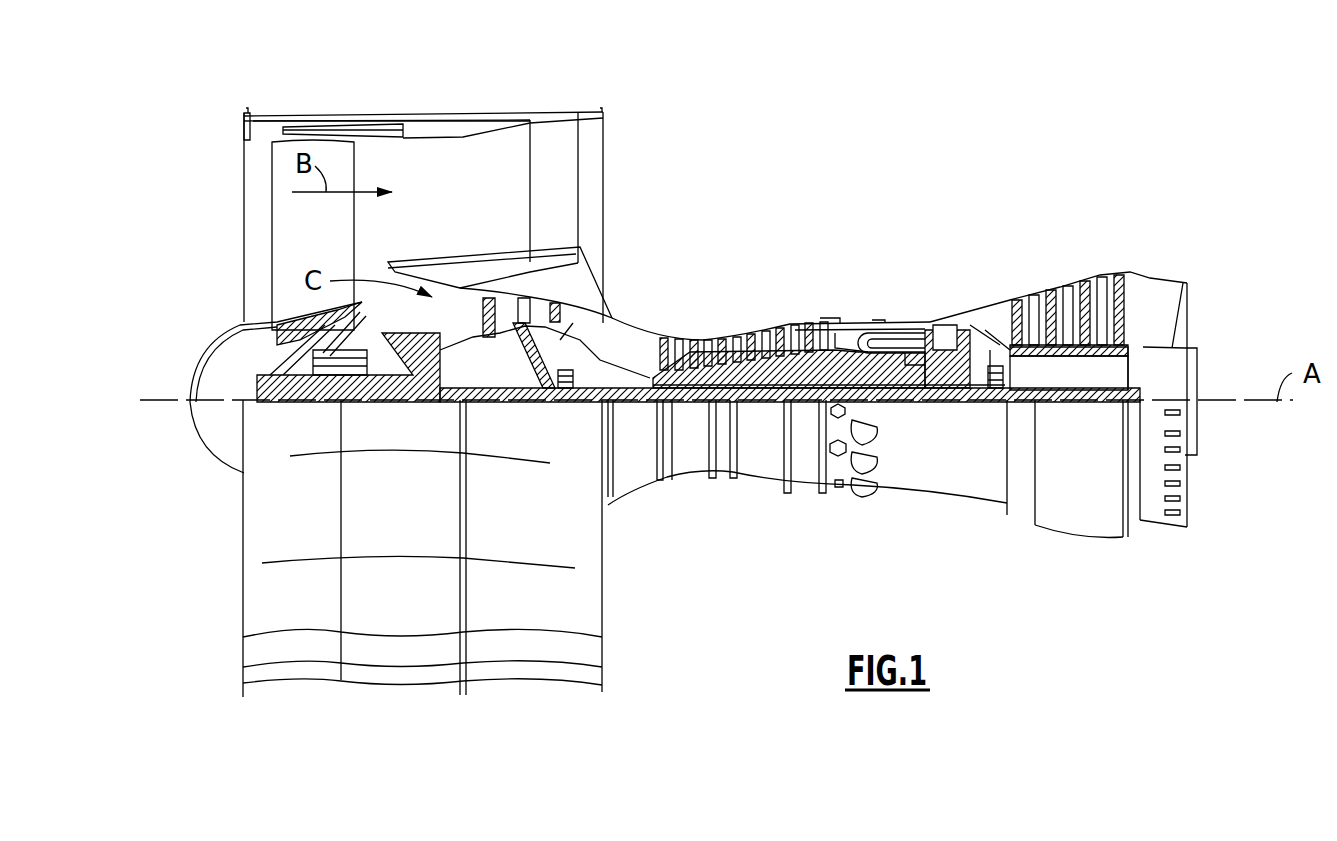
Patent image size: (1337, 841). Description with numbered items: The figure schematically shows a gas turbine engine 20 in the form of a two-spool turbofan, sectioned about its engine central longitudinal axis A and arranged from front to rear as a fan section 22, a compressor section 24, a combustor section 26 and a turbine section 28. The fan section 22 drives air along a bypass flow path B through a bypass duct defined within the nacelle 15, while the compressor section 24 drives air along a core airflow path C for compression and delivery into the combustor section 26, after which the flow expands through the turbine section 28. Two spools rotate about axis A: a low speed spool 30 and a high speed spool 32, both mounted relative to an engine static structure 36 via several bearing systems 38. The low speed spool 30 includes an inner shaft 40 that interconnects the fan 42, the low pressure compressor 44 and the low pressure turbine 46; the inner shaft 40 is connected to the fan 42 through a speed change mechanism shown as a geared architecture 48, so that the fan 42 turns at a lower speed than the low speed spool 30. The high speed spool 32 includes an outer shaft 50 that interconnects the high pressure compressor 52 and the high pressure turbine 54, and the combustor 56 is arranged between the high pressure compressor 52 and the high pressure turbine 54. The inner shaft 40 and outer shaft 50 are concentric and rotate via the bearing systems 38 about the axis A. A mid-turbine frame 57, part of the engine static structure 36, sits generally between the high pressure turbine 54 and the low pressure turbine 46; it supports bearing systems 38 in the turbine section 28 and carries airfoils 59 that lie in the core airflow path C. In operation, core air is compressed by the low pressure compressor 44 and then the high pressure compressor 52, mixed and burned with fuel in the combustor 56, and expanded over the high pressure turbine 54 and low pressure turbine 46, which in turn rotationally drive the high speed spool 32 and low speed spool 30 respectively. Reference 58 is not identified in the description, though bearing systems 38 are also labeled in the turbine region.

The nacelle 15 is at (425, 120).
The gas turbine engine 20 is at (882, 170).
The fan section 22 is at (355, 108).
The compressor section 24 is at (655, 310).
The combustor section 26 is at (878, 298).
The turbine section 28 is at (1025, 262).
The low speed spool 30 is at (762, 405).
The high speed spool 32 is at (808, 330).
The engine static structure 36 is at (805, 487).
The bearing systems 38 is at (565, 385).
The inner shaft 40 is at (630, 400).
The fan 42 is at (297, 245).
The low pressure compressor 44 is at (540, 300).
The low pressure turbine 46 is at (1070, 290).
The geared architecture 48 is at (430, 385).
The outer shaft 50 is at (890, 395).
The high pressure compressor 52 is at (738, 385).
The high pressure turbine 54 is at (945, 320).
The combustor 56 is at (880, 342).
The mid-turbine frame 57 is at (986, 310).
The bearing systems of mid-turbine frame 58 is at (990, 395).
The airfoils 59 is at (1020, 360).